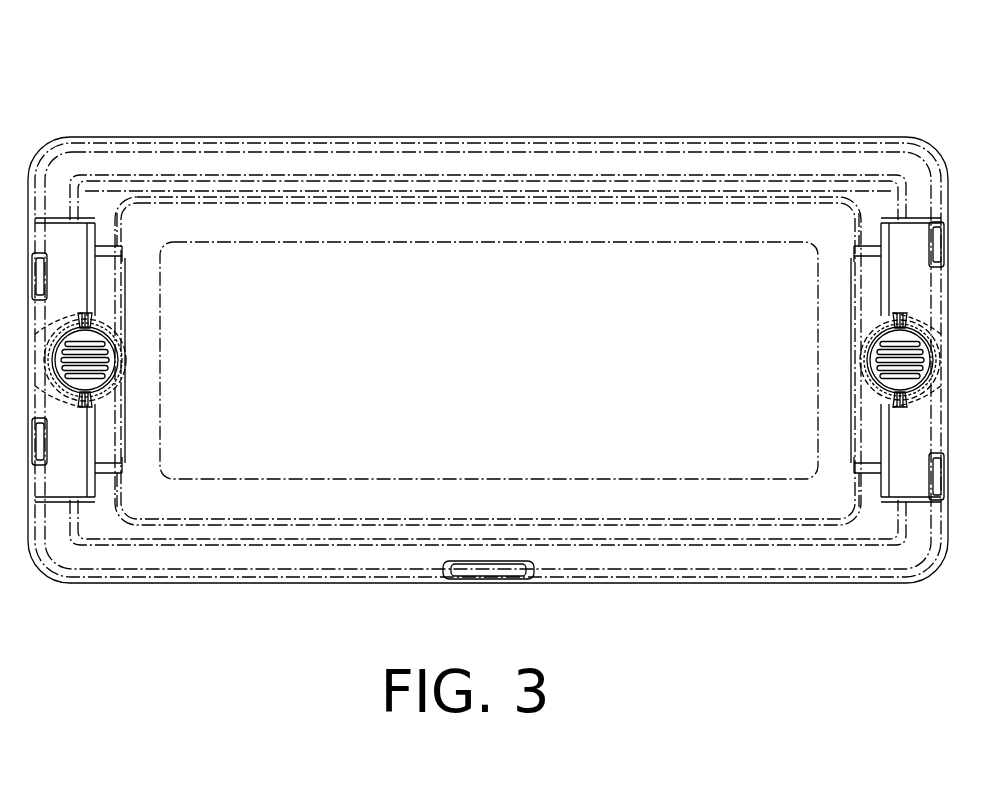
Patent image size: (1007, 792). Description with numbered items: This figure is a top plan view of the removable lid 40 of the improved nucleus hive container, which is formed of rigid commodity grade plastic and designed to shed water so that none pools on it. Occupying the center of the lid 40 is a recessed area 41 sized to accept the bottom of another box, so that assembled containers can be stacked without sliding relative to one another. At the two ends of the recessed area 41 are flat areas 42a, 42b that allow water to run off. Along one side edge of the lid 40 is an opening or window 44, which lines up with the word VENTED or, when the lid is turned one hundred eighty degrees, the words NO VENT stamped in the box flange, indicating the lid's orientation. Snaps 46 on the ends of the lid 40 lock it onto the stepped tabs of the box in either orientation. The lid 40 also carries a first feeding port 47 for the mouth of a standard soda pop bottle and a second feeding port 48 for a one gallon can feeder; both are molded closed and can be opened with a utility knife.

The lid 40 is at (566, 120).
The recessed area 41 is at (372, 268).
The flat area 42a is at (105, 295).
The flat area 42b is at (858, 292).
The window 44 is at (535, 578).
The snaps 46 is at (44, 465).
The first feeding port 47 is at (897, 318).
The second feeding port 48 is at (80, 316).